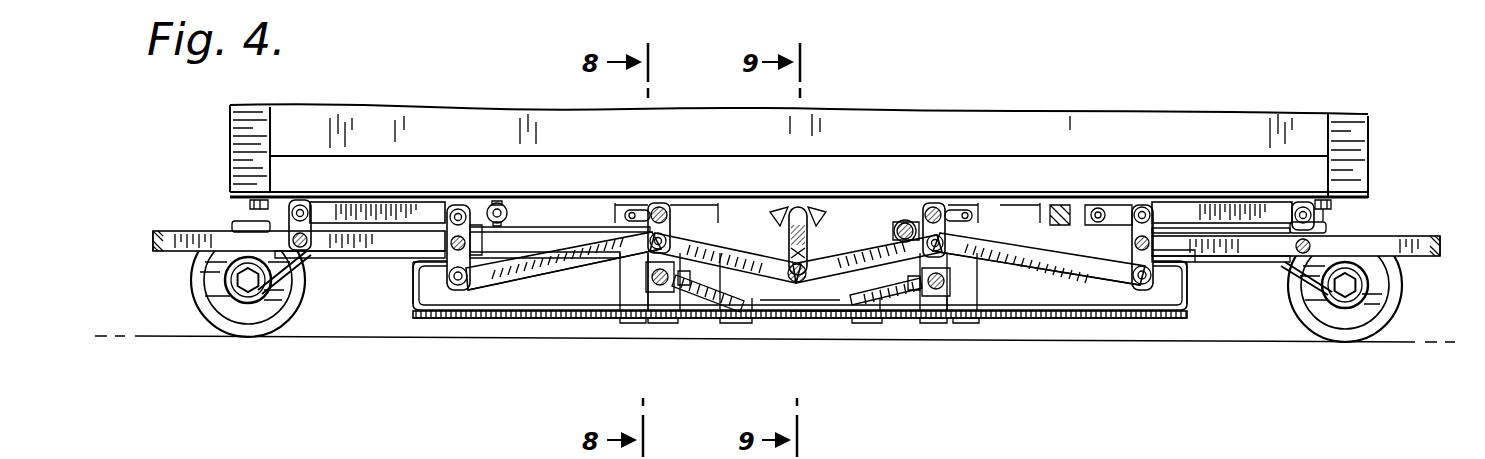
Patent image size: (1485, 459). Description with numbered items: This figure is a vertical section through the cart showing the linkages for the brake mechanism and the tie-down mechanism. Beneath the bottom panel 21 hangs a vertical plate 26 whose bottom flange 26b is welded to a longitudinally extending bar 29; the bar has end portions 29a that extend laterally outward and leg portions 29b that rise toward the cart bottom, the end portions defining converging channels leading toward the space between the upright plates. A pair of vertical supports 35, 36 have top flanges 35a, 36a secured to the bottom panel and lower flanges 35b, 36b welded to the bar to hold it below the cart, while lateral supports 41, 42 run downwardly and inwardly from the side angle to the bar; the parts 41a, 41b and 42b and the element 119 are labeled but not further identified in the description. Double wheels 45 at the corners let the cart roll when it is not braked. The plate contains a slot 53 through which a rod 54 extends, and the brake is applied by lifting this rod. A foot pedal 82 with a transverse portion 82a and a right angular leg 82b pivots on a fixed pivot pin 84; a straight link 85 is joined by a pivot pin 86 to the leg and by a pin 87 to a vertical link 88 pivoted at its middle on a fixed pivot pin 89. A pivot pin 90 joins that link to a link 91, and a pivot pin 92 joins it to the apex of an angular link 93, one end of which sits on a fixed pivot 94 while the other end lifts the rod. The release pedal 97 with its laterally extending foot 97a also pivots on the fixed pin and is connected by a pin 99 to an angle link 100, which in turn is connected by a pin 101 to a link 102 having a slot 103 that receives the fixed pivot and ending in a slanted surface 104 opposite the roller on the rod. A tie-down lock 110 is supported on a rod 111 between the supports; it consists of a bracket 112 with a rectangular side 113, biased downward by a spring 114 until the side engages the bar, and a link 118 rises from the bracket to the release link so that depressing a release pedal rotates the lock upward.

The bottom panel 21 is at (537, 204).
The vertical plate 26 is at (835, 300).
The bottom flange 26b is at (825, 319).
The longitudinally extending bar 29 is at (706, 320).
The end portions 29a is at (517, 319).
The leg portions 29b is at (413, 296).
The vertical support 35 is at (935, 324).
The top flange 35a is at (932, 203).
The lower flange 35b is at (936, 324).
The vertical support 36 is at (675, 324).
The top flange 36a is at (663, 203).
The lower flange 36b is at (660, 324).
The lateral support 41 is at (627, 275).
The guide slot 41a is at (630, 211).
The guide foot 41b is at (630, 324).
The lateral support 42 is at (976, 292).
The right guide foot 42b is at (976, 324).
The double wheels 45 is at (195, 305).
The slot 53 is at (803, 209).
The rod 54 is at (795, 283).
The foot pedal 82 is at (195, 230).
The transverse portion 82a is at (161, 252).
The right angular leg 82b is at (303, 203).
The fixed pivot pin 84 is at (304, 268).
The straight link 85 is at (409, 218).
The pivot pin 86 is at (303, 206).
The pin 87 is at (460, 208).
The vertical link 88 is at (447, 284).
The fixed pivot pin 89 is at (465, 243).
The pivot pin 90 is at (462, 285).
The link 91 is at (558, 264).
The pivot pin 92 is at (598, 240).
The angular link 93 is at (777, 266).
The fixed pivot 94 is at (666, 209).
The pedal 97 is at (1415, 237).
The laterally extending foot 97a is at (1442, 256).
The pin 99 is at (1194, 255).
The angle link 100 is at (1166, 244).
The pin 101 is at (1142, 207).
The link 102 is at (1055, 205).
The slot 103 is at (645, 203).
The slanted surface 104 is at (776, 211).
The tie-down lock 110 is at (737, 318).
The rod 111 is at (648, 278).
The bracket 112 is at (936, 295).
The rectangular side 113 is at (710, 325).
The spring 114 is at (700, 285).
The link 118 is at (905, 222).
The stop washer 119 is at (905, 227).